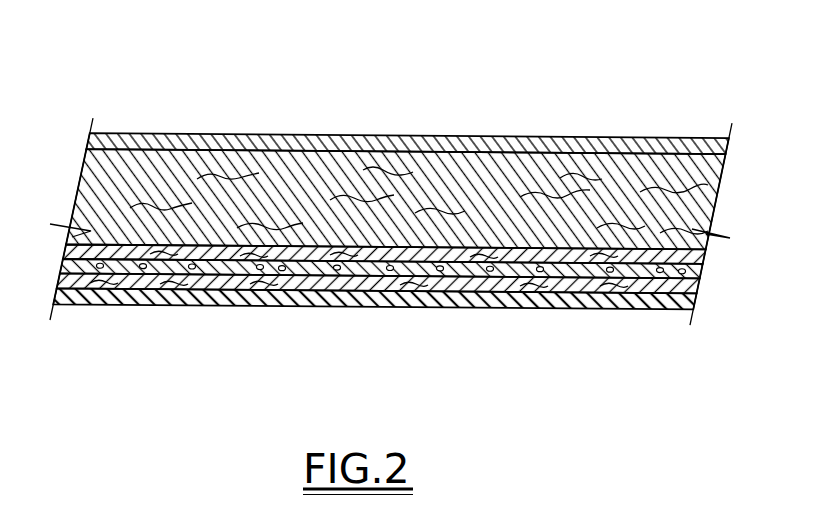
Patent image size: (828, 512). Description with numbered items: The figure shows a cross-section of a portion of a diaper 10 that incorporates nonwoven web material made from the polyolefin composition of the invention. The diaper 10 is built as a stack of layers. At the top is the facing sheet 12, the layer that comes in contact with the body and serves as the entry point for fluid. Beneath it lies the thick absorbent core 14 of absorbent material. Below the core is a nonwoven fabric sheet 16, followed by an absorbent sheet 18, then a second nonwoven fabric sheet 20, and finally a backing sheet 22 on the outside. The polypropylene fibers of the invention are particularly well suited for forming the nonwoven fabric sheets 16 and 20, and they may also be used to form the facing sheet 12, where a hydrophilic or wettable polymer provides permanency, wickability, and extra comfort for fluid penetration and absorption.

The diaper 10 is at (608, 96).
The facing sheet 12 is at (330, 145).
The absorbent core 14 is at (468, 188).
The nonwoven fabric sheet 16 is at (127, 250).
The absorbent sheet 18 is at (295, 278).
The second nonwoven fabric sheet 20 is at (336, 280).
The backing sheet 22 is at (477, 300).